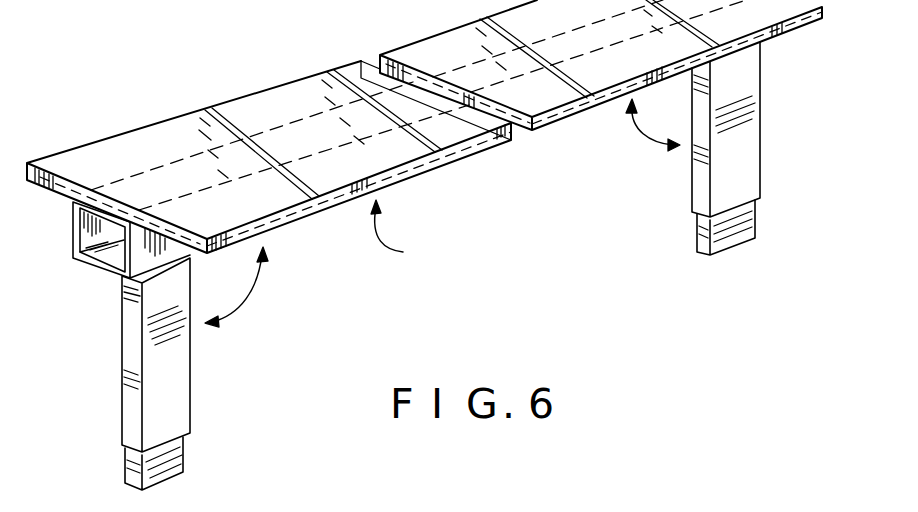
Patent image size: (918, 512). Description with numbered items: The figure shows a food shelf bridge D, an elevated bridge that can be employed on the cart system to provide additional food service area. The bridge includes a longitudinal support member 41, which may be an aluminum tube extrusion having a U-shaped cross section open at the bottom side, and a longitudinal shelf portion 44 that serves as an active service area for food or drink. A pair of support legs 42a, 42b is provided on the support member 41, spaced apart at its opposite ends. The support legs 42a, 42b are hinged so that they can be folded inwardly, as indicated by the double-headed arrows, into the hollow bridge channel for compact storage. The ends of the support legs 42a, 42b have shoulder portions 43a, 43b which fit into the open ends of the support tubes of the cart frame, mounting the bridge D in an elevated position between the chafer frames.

The longitudinal shelf portion 44 is at (280, 100).
The longitudinal support member 41 is at (100, 272).
The support leg 42a is at (174, 365).
The shoulder portion 43a is at (182, 453).
The support leg 42b is at (747, 142).
The shoulder portion 43b is at (750, 237).
The food shelf bridge D is at (401, 233).